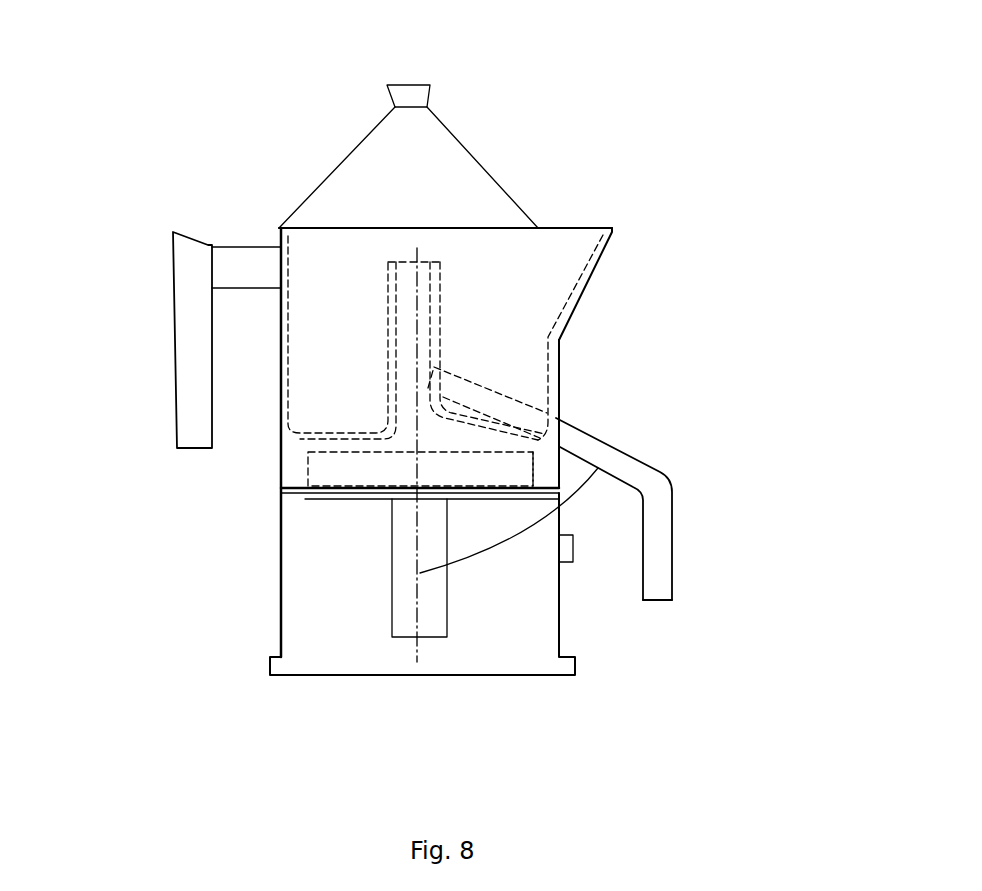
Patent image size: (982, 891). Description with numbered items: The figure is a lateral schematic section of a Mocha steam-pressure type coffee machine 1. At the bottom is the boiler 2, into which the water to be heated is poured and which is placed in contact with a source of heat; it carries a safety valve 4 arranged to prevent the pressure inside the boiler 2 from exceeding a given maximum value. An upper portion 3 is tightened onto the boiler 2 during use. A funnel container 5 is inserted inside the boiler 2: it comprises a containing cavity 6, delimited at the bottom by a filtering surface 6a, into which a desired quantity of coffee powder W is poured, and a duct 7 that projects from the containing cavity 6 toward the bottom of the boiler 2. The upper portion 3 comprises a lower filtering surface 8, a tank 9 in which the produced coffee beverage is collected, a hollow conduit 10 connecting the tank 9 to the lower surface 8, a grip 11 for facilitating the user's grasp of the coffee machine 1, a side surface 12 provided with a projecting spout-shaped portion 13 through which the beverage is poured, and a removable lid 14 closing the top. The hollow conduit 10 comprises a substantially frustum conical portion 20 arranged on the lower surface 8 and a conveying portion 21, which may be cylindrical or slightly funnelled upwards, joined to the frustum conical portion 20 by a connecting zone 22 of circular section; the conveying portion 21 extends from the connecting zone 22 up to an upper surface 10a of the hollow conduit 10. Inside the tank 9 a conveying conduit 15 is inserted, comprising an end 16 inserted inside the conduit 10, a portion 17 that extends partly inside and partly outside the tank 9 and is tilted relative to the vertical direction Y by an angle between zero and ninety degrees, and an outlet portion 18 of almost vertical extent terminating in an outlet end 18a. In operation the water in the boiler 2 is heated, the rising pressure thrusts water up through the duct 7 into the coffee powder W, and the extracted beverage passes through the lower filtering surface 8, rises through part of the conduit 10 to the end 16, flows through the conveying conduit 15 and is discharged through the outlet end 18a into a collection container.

The coffee machine 1 is at (683, 157).
The boiler 2 is at (181, 582).
The upper portion 3 is at (203, 187).
The safety valve 4 is at (573, 552).
The funnel container 5 is at (392, 507).
The containing cavity 6 is at (530, 478).
The filtering surface 6a is at (467, 499).
The duct 7 is at (428, 603).
The lower filtering surface 8 is at (300, 450).
The tank 9 is at (515, 352).
The hollow conduit 10 is at (400, 390).
The upper surface 10a is at (423, 262).
The grip 11 is at (173, 327).
The side surface 12 is at (576, 401).
The spout 13 is at (592, 275).
The lid 14 is at (405, 186).
The conveying conduit 15 is at (689, 457).
The end 16 is at (467, 355).
The portion 17 is at (558, 397).
The outlet portion 18 is at (705, 540).
The outlet end 18a is at (657, 600).
The frustum conical portion 20 is at (377, 445).
The conveying portion 21 is at (393, 330).
The connecting zone 22 is at (377, 437).
The coffee powder W is at (475, 481).
The vertical direction Y is at (417, 545).